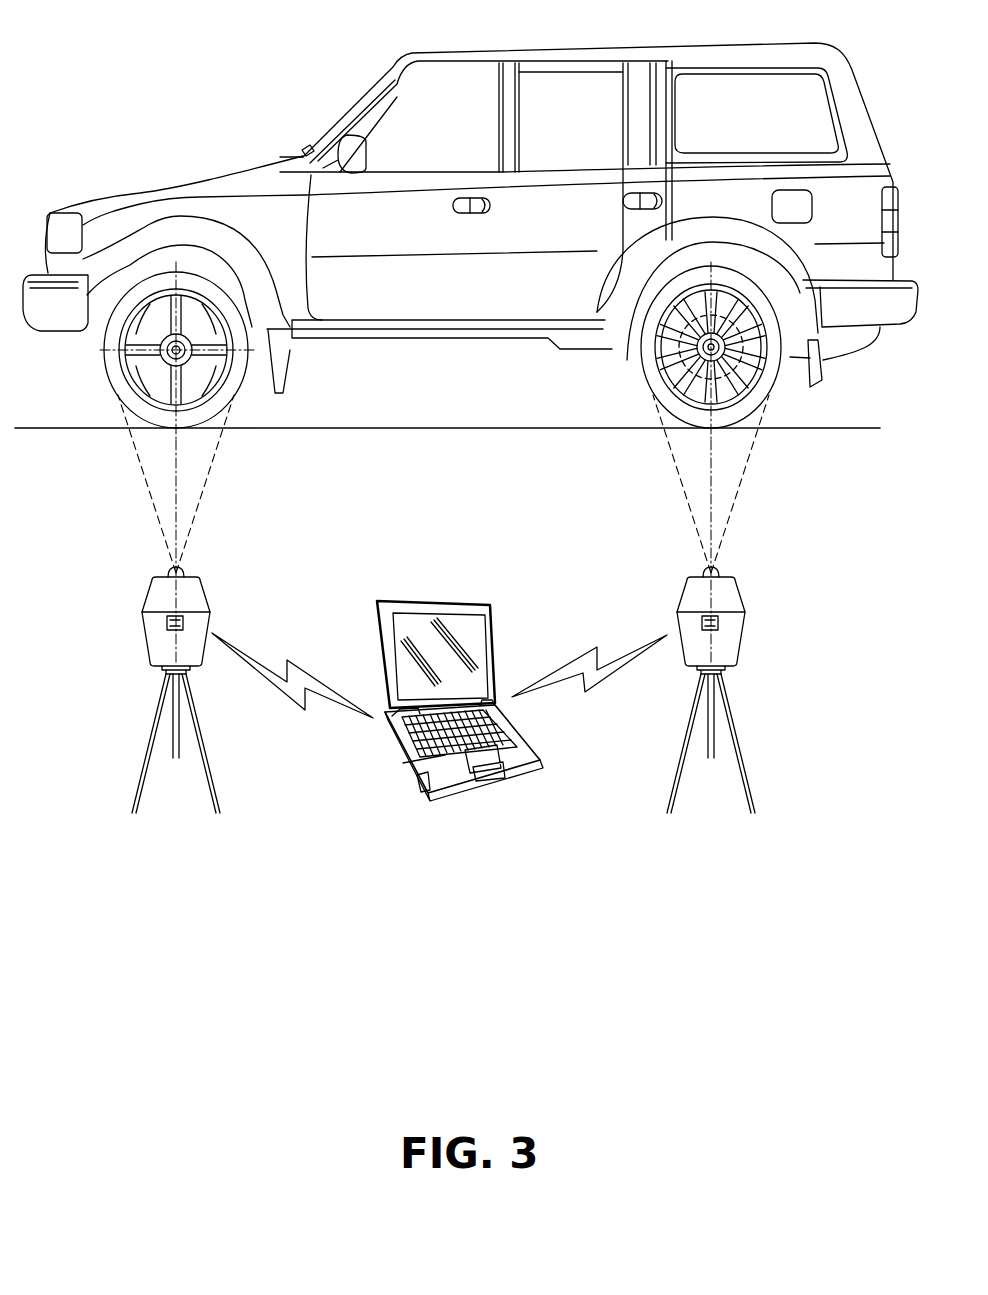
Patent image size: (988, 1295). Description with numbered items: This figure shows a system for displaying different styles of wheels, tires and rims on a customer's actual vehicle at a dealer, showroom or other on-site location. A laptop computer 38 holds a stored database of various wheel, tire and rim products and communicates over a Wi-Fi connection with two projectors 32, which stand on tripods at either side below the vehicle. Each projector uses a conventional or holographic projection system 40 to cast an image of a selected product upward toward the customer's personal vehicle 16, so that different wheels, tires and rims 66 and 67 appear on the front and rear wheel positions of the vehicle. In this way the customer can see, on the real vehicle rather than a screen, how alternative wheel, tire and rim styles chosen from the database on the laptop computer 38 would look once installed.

The vehicle 16 is at (241, 172).
The projector 32 is at (147, 590).
The laptop computer 38 is at (423, 598).
The projection system 40 is at (176, 488).
The wheel, tire and rim 66 is at (115, 333).
The wheel, tire and rim 67 is at (780, 402).